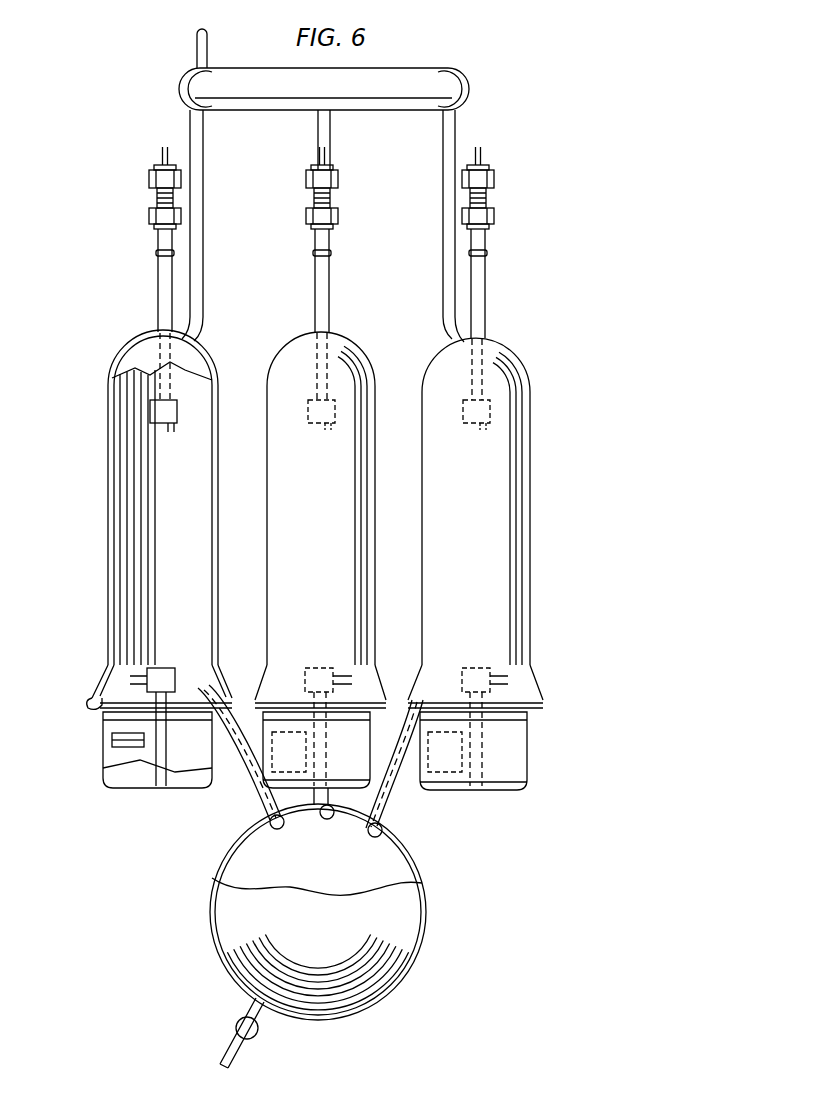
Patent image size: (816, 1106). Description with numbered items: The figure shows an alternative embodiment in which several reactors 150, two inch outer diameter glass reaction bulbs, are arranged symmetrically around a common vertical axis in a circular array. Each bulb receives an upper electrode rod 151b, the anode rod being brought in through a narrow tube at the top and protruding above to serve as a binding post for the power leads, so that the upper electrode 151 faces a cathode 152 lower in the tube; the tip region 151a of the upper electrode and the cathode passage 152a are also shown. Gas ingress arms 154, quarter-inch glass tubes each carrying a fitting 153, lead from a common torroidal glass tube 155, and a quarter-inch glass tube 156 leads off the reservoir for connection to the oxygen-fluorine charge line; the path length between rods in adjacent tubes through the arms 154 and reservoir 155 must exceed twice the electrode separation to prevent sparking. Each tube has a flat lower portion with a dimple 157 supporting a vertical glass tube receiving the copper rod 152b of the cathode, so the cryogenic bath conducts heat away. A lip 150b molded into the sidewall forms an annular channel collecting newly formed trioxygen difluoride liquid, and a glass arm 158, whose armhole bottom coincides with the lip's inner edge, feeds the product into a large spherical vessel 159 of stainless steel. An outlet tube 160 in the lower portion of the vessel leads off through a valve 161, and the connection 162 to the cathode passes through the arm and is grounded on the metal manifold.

The reactor 150 is at (108, 519).
The lip 150b is at (98, 704).
The electrode 151 is at (145, 413).
The cup outlet 151a is at (163, 422).
The upper electrode rod 151b is at (160, 382).
The cathode 152 is at (160, 669).
The valve block passage 152a is at (148, 672).
The copper rod 152b is at (130, 712).
The fitting 153 is at (157, 238).
The gas ingress arm 154 is at (330, 139).
The torroidal glass tube 155 is at (398, 75).
The glass tube 156 is at (196, 47).
The dimple 157 is at (108, 735).
The glass arm 158 is at (245, 797).
The spherical vessel 159 is at (415, 864).
The outlet tube 160 is at (255, 1007).
The valve 161 is at (235, 1029).
The connection 162 is at (200, 688).